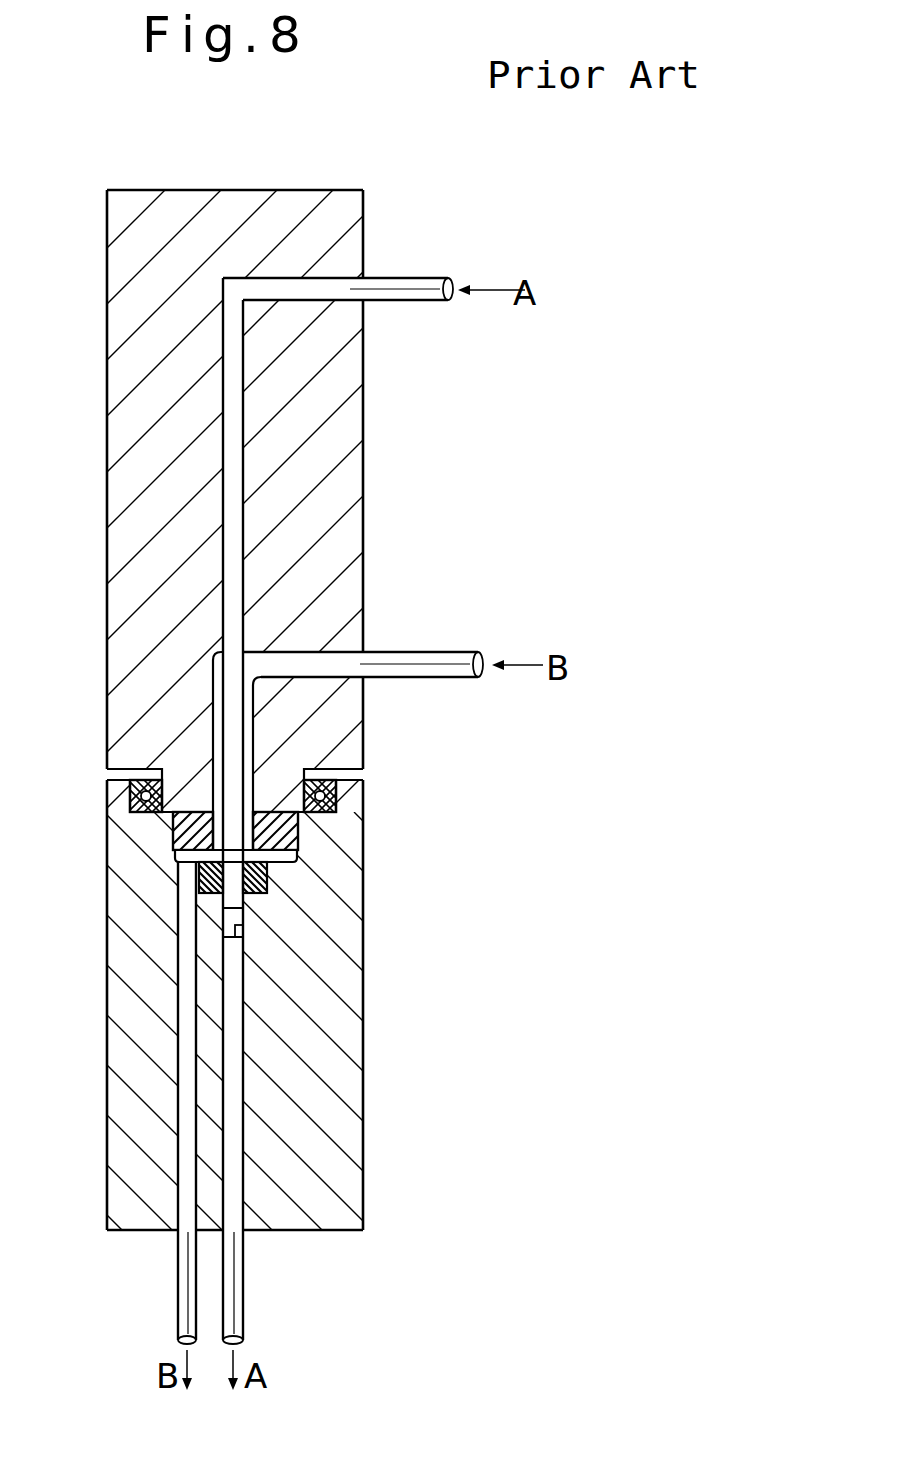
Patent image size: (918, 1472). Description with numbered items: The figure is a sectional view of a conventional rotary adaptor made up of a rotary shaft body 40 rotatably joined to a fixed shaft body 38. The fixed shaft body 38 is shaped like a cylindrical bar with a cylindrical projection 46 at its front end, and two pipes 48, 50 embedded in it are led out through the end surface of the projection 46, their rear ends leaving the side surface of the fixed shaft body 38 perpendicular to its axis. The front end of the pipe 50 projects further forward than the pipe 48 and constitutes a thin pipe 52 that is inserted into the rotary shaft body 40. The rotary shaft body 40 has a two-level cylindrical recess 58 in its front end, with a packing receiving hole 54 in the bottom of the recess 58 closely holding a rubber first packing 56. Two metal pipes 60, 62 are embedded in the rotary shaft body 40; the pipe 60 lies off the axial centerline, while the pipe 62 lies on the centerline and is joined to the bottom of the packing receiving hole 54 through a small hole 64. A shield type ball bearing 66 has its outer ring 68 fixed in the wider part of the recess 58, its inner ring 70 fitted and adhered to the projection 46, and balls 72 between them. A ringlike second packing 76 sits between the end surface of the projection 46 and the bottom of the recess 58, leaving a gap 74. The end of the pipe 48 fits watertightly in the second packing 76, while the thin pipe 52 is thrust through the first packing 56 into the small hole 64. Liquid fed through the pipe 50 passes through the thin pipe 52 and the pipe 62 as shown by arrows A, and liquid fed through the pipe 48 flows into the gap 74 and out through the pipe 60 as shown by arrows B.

The fixed shaft body 38 is at (363, 430).
The rotary shaft body 40 is at (363, 1063).
The cylindrical projection 46 is at (190, 793).
The pipe 48 is at (410, 679).
The pipe 50 is at (412, 302).
The thin pipe 52 is at (248, 916).
The packing receiving hole 54 is at (246, 909).
The first packing 56 is at (268, 877).
The recess 58 is at (173, 841).
The pipe 60 is at (175, 1282).
The pipe 62 is at (247, 1283).
The small hole 64 is at (250, 940).
The ball bearing 66 is at (432, 745).
The outer ring 68 is at (334, 797).
The inner ring 70 is at (304, 774).
The balls 72 is at (127, 770).
The gap 74 is at (180, 866).
The second packing 76 is at (300, 853).